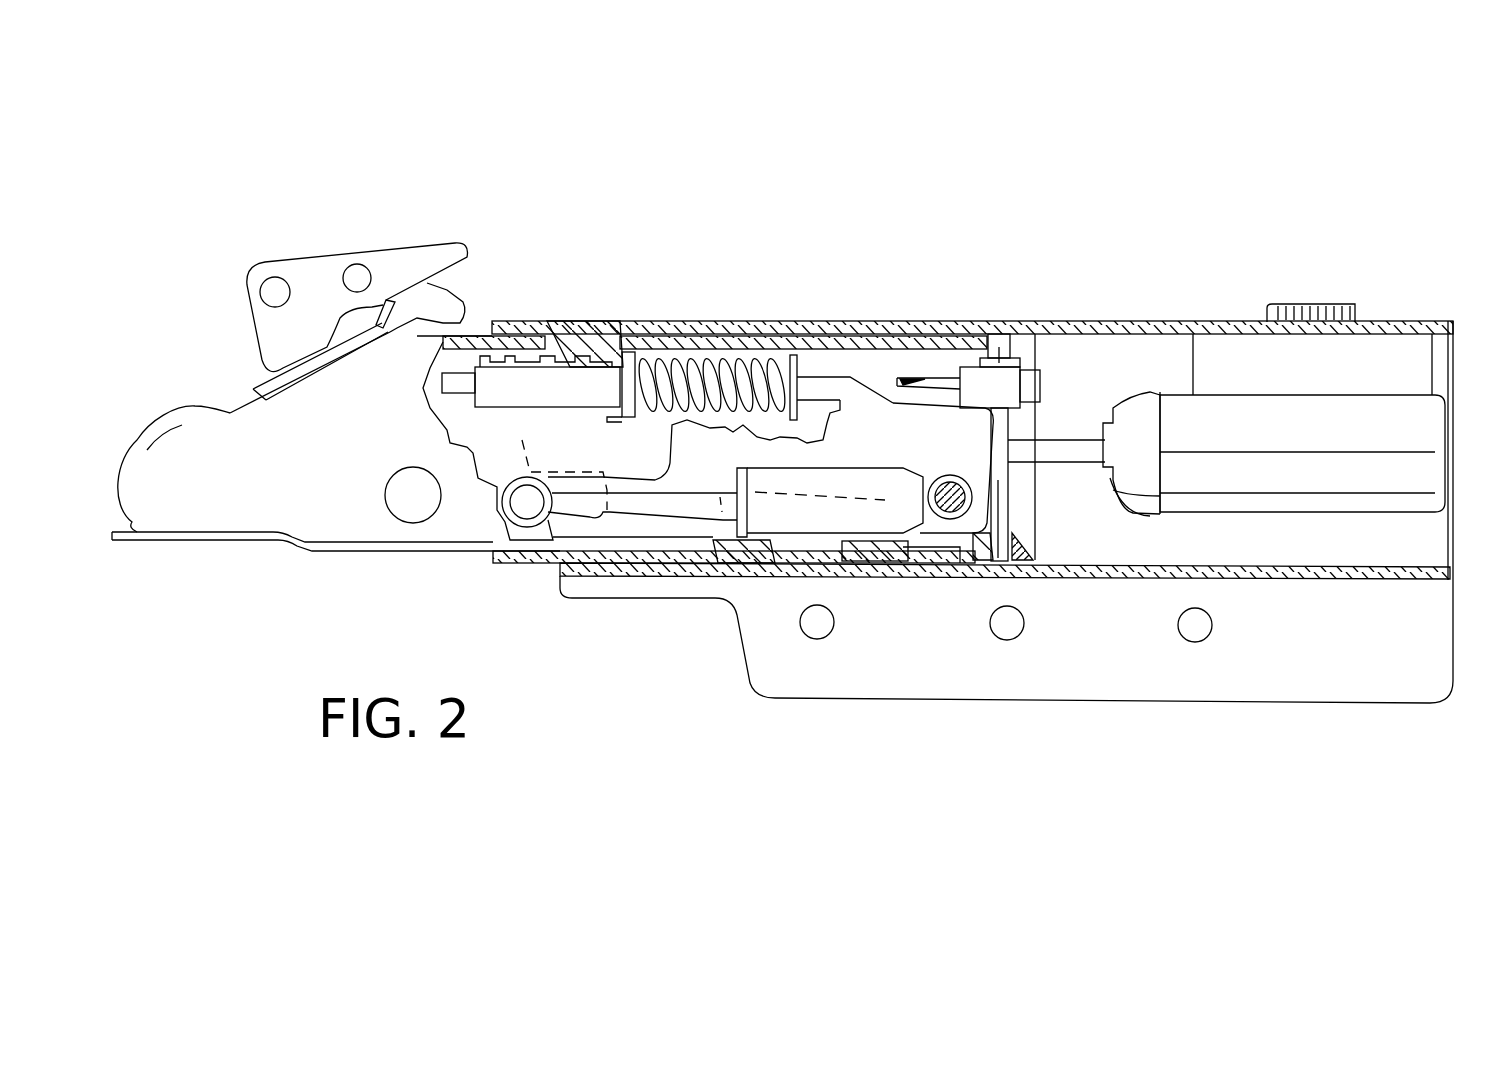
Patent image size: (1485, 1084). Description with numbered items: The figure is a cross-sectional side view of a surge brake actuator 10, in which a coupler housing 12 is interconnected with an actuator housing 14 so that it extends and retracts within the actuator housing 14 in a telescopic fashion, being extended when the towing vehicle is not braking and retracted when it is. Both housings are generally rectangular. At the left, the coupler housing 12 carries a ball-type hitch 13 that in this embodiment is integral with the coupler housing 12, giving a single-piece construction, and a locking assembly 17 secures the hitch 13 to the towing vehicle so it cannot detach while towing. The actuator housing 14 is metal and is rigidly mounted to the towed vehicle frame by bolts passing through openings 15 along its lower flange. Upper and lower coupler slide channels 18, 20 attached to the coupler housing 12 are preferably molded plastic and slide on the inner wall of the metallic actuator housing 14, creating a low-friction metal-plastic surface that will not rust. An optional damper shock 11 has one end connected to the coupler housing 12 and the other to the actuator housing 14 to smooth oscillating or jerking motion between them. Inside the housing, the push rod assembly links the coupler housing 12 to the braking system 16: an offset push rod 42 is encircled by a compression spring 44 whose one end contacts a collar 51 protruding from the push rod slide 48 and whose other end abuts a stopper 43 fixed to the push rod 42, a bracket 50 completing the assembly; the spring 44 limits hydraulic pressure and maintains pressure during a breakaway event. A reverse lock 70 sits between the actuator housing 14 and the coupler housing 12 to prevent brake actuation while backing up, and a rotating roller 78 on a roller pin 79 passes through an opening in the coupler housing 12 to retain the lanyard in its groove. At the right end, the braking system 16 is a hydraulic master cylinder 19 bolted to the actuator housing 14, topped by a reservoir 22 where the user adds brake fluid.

The surge brake actuator 10 is at (620, 165).
The damper shock 11 is at (842, 532).
The coupler housing 12 is at (357, 545).
The ball-type hitch 13 is at (172, 421).
The actuator housing 14 is at (1182, 322).
The openings 15 is at (819, 638).
The braking system 16 is at (1373, 385).
The locking assembly 17 is at (312, 268).
The upper coupler slide channel 18 is at (577, 340).
The hydraulic master cylinder 19 is at (1317, 452).
The lower coupler slide channel 20 is at (733, 555).
The reservoir 22 is at (1320, 305).
The push rod 42 is at (843, 390).
The stopper 43 is at (797, 357).
The compression spring 44 is at (737, 365).
The push rod slide 48 is at (537, 397).
The bracket 50 is at (623, 413).
The collar 51 is at (630, 367).
The reverse lock 70 is at (882, 449).
The rotating roller 78 is at (973, 370).
The roller pin 79 is at (1013, 432).